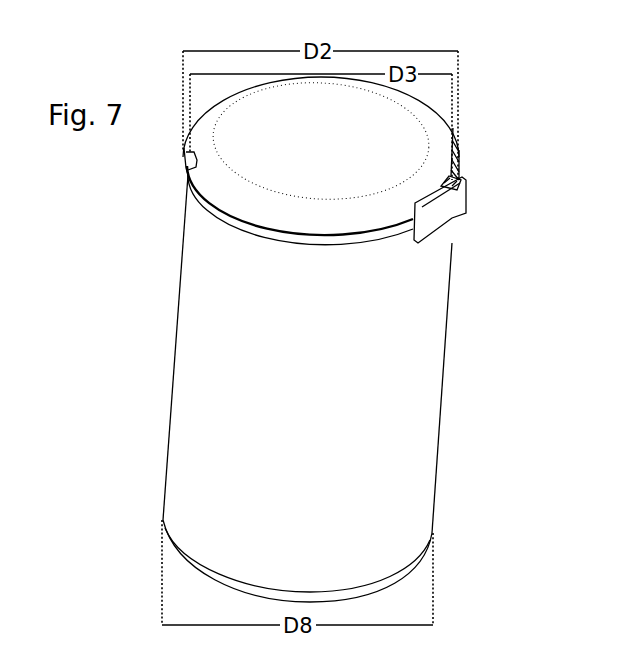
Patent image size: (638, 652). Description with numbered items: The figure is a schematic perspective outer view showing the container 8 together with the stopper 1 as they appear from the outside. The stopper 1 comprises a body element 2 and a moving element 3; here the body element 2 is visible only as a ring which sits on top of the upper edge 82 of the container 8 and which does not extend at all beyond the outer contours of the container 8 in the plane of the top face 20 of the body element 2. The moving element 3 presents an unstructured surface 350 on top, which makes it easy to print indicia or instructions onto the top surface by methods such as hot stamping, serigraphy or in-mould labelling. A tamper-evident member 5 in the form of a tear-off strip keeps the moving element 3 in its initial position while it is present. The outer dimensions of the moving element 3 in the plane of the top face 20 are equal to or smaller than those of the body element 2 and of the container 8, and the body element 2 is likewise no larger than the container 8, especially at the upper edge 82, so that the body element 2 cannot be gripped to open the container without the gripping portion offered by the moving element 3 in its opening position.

The stopper 1 is at (493, 122).
The body element 2 is at (228, 218).
The moving element 3 is at (262, 155).
The tamper-evident member 5 is at (443, 213).
The container 8 is at (403, 385).
The top face 20 is at (184, 157).
The upper edge 82 is at (395, 238).
The unstructured surface 350 is at (393, 140).